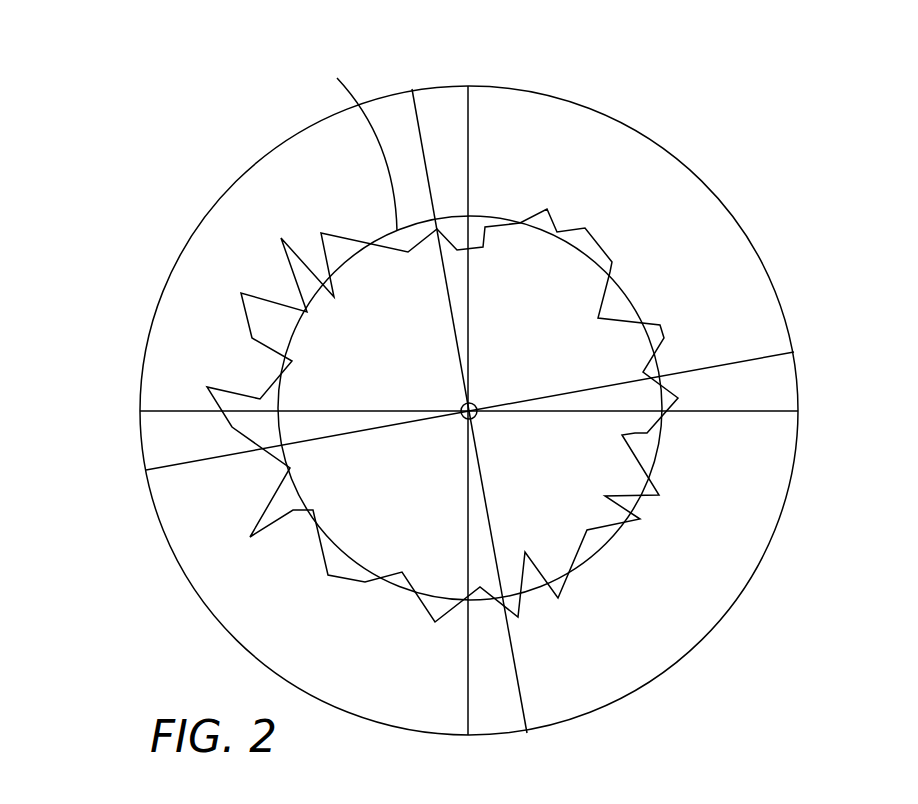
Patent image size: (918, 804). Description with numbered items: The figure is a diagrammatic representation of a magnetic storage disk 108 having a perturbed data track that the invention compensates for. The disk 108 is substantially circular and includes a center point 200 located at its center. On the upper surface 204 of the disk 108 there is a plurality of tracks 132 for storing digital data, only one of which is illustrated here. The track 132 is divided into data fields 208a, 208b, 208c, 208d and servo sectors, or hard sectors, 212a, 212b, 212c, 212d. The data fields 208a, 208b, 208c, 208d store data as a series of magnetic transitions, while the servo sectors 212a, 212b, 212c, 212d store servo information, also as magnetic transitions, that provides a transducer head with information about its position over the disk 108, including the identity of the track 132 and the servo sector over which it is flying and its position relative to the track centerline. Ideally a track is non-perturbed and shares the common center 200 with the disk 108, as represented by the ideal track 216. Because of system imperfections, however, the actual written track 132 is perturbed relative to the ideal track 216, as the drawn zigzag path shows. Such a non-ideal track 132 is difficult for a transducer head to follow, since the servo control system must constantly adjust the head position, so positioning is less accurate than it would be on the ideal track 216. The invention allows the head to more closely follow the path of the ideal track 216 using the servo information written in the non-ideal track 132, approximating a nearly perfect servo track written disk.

The disk 108 is at (678, 158).
The track 132 is at (240, 313).
The center point 200 is at (479, 403).
The upper surface 204 is at (565, 101).
The data field 208a is at (723, 199).
The data field 208b is at (723, 597).
The data field 208c is at (193, 571).
The data field 208d is at (270, 168).
The servo sector 212a is at (435, 95).
The servo sector 212b is at (792, 378).
The servo sector 212c is at (505, 723).
The servo sector 212d is at (150, 461).
The ideal track 216 is at (347, 149).